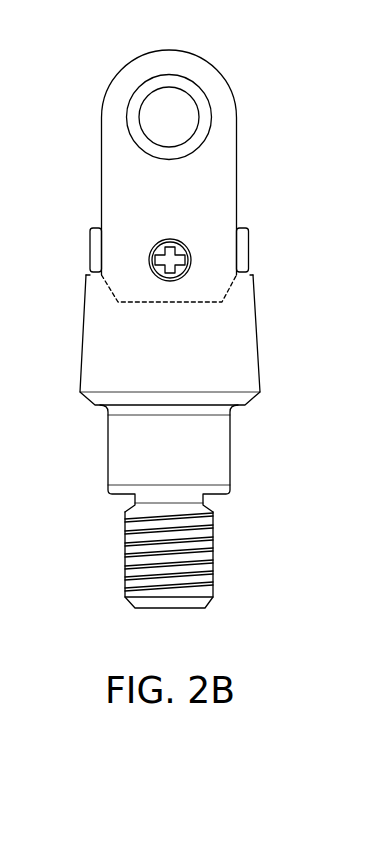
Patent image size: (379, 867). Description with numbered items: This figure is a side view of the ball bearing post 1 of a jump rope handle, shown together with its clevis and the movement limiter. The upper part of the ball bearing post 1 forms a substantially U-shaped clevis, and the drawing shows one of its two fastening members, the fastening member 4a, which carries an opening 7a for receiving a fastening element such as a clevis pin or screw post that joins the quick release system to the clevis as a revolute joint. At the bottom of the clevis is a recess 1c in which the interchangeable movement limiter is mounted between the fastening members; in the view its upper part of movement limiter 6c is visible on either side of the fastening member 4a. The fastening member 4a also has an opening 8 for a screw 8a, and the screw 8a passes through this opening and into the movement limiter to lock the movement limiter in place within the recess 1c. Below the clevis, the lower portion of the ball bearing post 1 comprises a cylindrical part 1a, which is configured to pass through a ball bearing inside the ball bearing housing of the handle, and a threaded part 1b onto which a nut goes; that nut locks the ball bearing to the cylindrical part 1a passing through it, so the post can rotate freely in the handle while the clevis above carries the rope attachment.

The ball bearing post 1 is at (82, 457).
The cylindrical part 1a is at (213, 545).
The threaded part 1b is at (213, 452).
The recess in the bottom of the clevis 1c is at (190, 298).
The fastening member 4a is at (178, 185).
The upper part of movement limiter 6c is at (97, 240).
The opening for fastening element 7a is at (172, 117).
The opening for screw 8 is at (147, 272).
The screw 8a is at (193, 272).